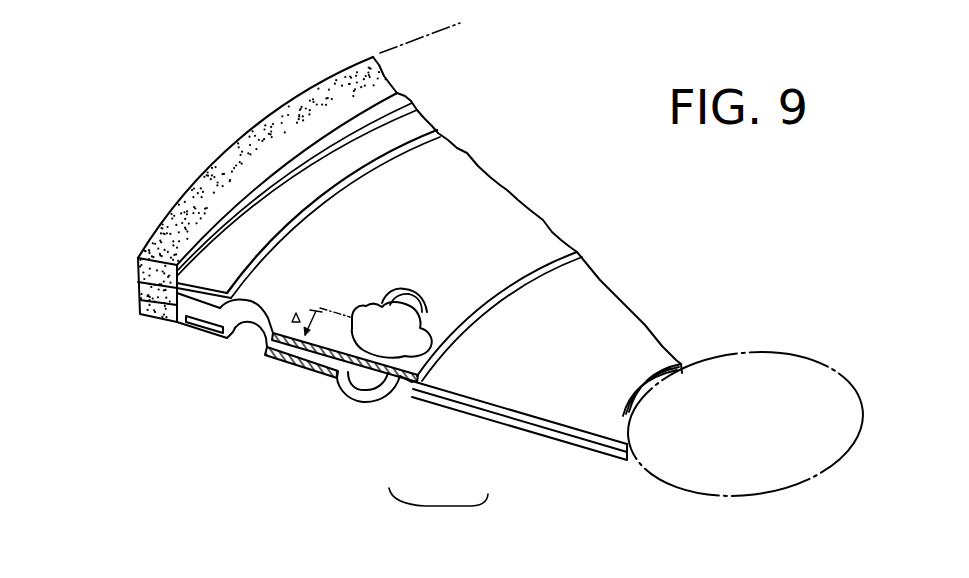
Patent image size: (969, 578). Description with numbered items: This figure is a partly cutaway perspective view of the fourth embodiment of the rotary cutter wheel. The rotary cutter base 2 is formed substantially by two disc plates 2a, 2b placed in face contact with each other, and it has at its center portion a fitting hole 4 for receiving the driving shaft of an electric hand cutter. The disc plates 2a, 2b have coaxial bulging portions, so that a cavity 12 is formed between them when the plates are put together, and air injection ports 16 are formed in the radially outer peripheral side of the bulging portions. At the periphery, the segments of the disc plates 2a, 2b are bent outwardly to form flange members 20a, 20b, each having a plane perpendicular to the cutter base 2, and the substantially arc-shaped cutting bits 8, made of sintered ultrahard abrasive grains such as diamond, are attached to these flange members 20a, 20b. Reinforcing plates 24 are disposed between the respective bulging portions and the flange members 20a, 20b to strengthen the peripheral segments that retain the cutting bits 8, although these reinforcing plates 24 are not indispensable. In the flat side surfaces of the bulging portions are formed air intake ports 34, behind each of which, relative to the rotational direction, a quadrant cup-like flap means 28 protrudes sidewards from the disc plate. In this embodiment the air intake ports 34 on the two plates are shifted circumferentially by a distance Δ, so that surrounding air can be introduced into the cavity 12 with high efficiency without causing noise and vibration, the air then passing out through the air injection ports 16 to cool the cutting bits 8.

The rotary cutter base 2 is at (438, 513).
The disc plate 2a is at (445, 398).
The disc plate 2b is at (510, 426).
The fitting hole 4 is at (672, 487).
The cutting bits 8 is at (333, 80).
The cavity 12 is at (291, 357).
The air injection ports 16 is at (253, 326).
The flange member 20a is at (137, 281).
The flange member 20b is at (138, 306).
The reinforcing plates 24 is at (263, 217).
The flap means 28 is at (400, 298).
The air intake ports 34 is at (372, 328).